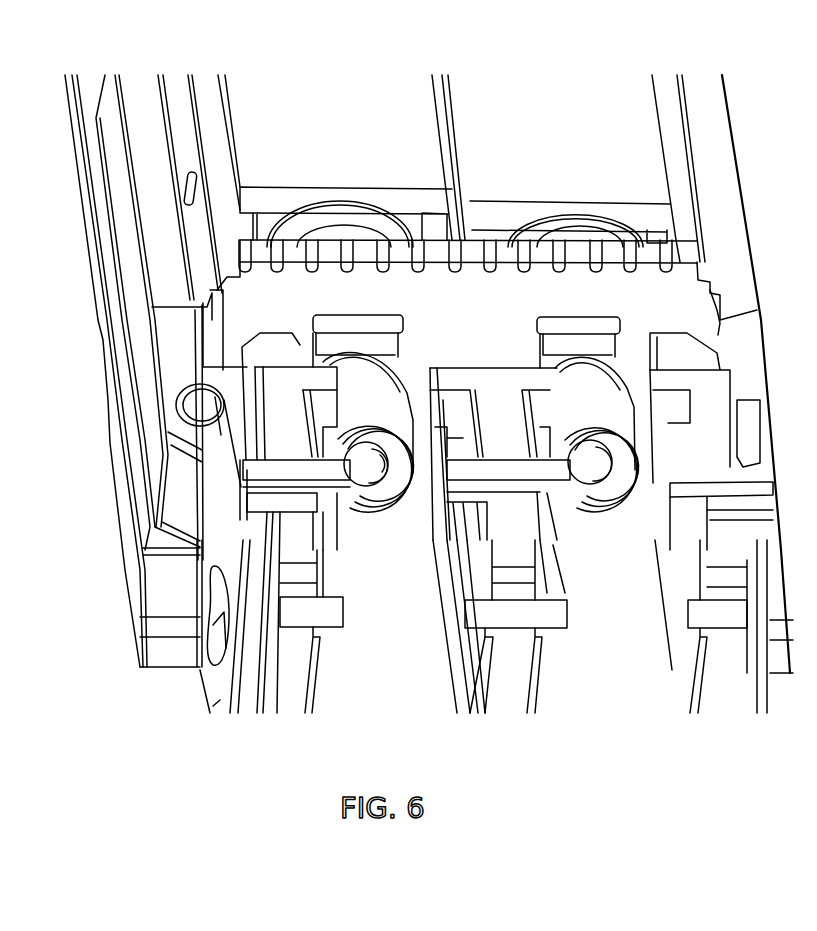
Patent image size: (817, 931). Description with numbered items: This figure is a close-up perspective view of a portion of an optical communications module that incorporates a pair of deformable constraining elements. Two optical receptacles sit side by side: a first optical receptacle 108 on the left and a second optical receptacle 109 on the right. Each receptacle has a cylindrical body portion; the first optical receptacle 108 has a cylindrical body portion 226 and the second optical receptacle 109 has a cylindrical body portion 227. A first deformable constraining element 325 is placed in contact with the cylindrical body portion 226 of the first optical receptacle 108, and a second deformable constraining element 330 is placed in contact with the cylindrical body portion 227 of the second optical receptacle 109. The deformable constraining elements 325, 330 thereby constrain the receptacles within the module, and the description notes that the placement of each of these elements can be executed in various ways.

The first deformable constraining element 325 is at (374, 318).
The second deformable constraining element 330 is at (592, 318).
The cylindrical body portion 226 is at (377, 388).
The cylindrical body portion 227 is at (573, 385).
The first optical receptacle 108 is at (366, 522).
The second optical receptacle 109 is at (583, 524).